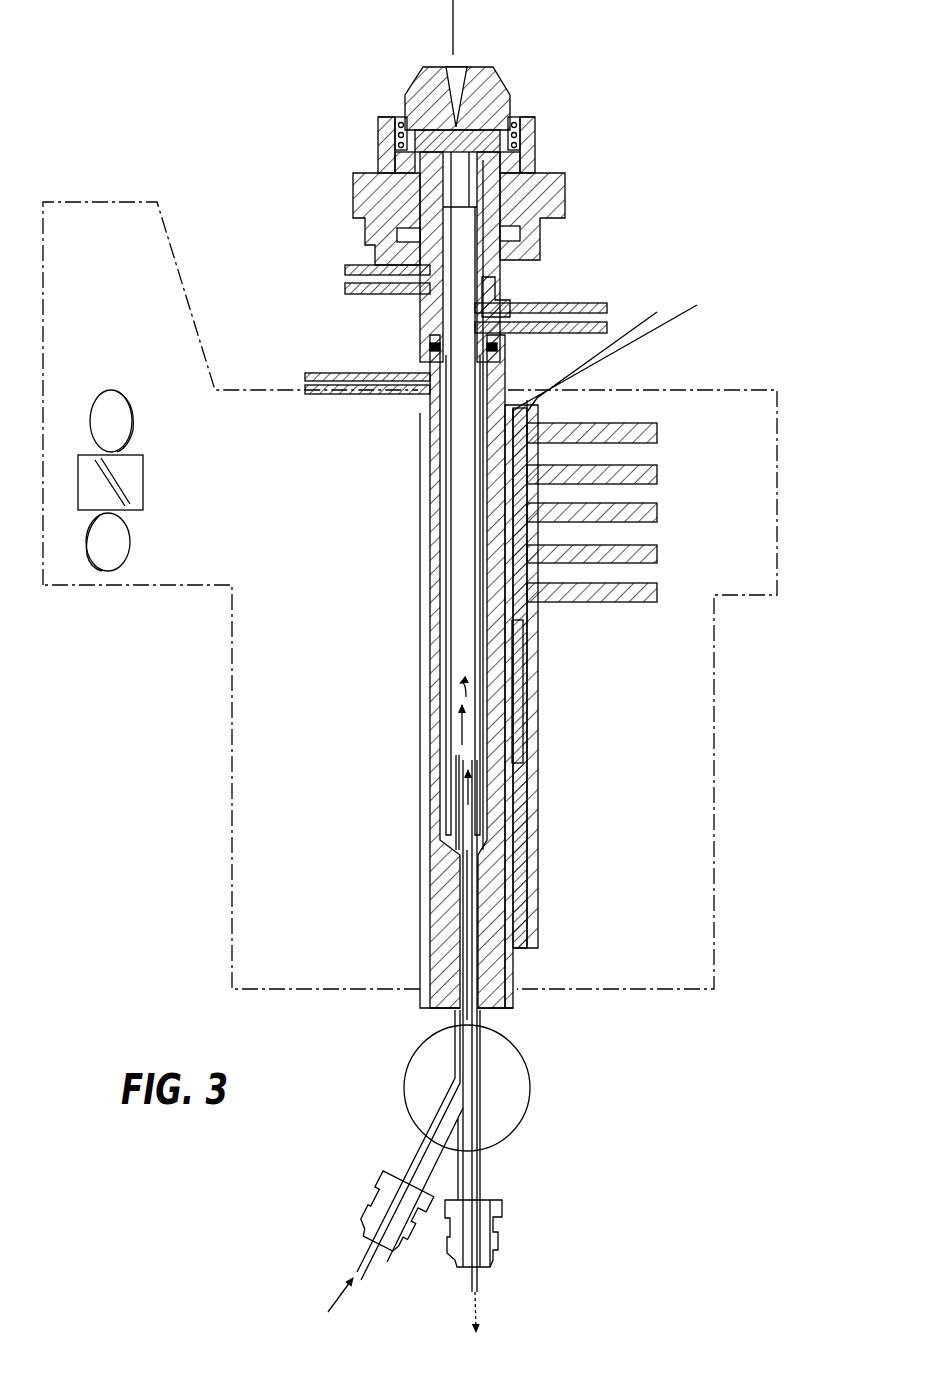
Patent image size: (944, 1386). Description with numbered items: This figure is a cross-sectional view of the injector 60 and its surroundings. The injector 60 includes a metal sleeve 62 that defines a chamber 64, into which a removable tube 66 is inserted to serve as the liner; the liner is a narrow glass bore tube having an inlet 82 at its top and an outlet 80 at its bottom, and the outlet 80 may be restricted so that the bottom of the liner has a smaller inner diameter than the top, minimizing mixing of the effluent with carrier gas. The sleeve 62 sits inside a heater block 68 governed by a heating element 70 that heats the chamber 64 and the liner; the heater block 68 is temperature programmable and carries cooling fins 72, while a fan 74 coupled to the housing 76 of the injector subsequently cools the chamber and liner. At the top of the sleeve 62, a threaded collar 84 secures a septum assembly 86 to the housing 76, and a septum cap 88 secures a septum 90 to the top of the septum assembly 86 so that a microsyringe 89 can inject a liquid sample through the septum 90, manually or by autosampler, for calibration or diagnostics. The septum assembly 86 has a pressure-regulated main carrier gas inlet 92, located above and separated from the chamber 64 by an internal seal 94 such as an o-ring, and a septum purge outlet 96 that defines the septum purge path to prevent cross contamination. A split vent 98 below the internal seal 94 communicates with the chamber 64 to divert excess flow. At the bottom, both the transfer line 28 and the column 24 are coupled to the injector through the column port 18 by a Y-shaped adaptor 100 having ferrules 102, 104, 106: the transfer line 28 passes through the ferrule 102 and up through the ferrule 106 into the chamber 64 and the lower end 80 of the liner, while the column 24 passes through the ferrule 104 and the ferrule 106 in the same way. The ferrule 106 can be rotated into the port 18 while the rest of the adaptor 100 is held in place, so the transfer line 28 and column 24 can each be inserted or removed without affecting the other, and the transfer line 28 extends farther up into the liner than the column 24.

The column port 18 is at (458, 1018).
The column 24 is at (485, 1272).
The transfer line 28 is at (355, 1258).
The injector 60 is at (358, 115).
The metal sleeve 62 is at (430, 838).
The chamber 64 is at (445, 790).
The tube 66 is at (452, 775).
The heater block 68 is at (540, 847).
The heating element 70 is at (530, 400).
The cooling fins 72 is at (658, 508).
The fan 74 is at (142, 470).
The housing 76 is at (228, 815).
The outlet 80 is at (495, 852).
The inlet 82 is at (505, 282).
The threaded collar 84 is at (362, 235).
The septum assembly 86 is at (420, 347).
The septum cap 88 is at (506, 90).
The microsyringe 89 is at (455, 12).
The septum 90 is at (515, 108).
The main carrier gas inlet 92 is at (590, 302).
The internal seal 94 is at (497, 348).
The septum purge outlet 96 is at (343, 272).
The split vent 98 is at (365, 392).
The Y-shaped adaptor 100 is at (524, 1108).
The ferrule 102 is at (412, 1155).
The ferrule 104 is at (485, 1172).
The ferrule 106 is at (482, 1020).